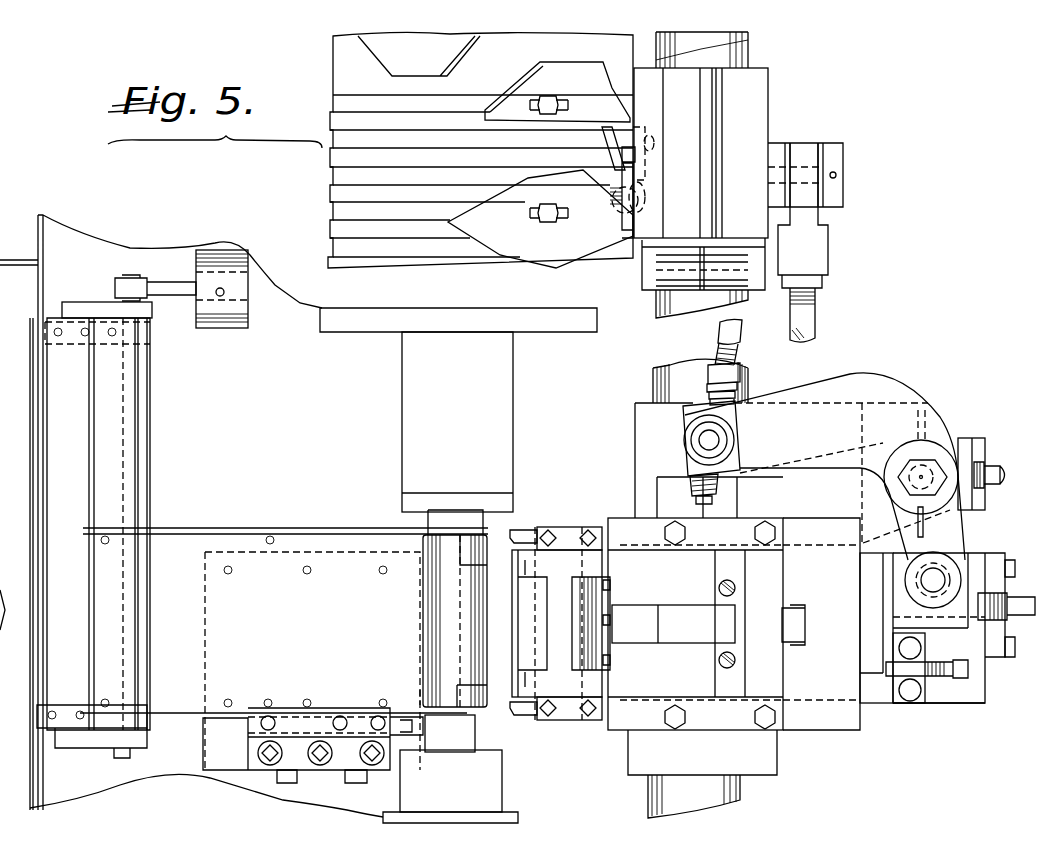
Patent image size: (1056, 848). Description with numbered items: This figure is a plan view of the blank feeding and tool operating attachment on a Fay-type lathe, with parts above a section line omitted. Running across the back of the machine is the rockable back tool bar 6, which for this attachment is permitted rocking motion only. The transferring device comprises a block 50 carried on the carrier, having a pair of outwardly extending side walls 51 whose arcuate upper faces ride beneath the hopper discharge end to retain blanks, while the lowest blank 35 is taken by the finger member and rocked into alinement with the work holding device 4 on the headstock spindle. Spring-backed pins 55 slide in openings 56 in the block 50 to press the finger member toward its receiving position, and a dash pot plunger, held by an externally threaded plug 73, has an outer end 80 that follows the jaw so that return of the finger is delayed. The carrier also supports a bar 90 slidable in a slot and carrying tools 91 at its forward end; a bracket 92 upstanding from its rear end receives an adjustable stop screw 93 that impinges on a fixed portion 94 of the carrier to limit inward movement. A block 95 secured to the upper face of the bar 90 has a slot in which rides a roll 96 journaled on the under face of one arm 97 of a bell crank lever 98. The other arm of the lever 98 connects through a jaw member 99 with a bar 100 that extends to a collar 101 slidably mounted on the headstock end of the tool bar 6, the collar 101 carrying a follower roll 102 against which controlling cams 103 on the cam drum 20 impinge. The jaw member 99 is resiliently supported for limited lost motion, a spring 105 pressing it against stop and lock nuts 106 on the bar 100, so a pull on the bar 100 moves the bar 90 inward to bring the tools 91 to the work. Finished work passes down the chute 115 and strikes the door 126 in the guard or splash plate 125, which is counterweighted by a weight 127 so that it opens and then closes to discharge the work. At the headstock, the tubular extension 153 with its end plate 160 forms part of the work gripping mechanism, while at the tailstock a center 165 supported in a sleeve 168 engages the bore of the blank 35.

The work holding device 4 is at (398, 320).
The back tool bar 6 is at (750, 52).
The cam drum 20 is at (480, 150).
The blank 35 is at (455, 608).
The block 50 is at (695, 589).
The side walls 51 is at (572, 548).
The pins 55 is at (610, 592).
The openings 56 is at (735, 588).
The threaded plug 73 is at (806, 620).
The outer end of plunger 80 is at (610, 620).
The bar 90 is at (876, 695).
The tools 91 is at (522, 538).
The bracket 92 is at (923, 682).
The adjustable stop screw 93 is at (938, 660).
The fixed portion of carrier 94 is at (850, 720).
The block 95 is at (968, 562).
The roll 96 is at (953, 560).
The arm of bell crank lever 97 is at (924, 528).
The bell crank lever 98 is at (858, 390).
The jaw member 99 is at (685, 426).
The bar 100 is at (798, 325).
The collar 101 is at (748, 118).
The follower roll 102 is at (640, 198).
The controlling cams 103 is at (540, 165).
The spring 105 is at (707, 386).
The stop and lock nuts 106 is at (682, 483).
The chute 115 is at (190, 537).
The guard or splash plate 125 is at (42, 284).
The door element 126 is at (94, 530).
The weight 127 is at (240, 312).
The tubular extension 153 is at (457, 422).
The end plate 160 is at (405, 500).
The center 165 is at (447, 730).
The sleeve 168 is at (450, 786).